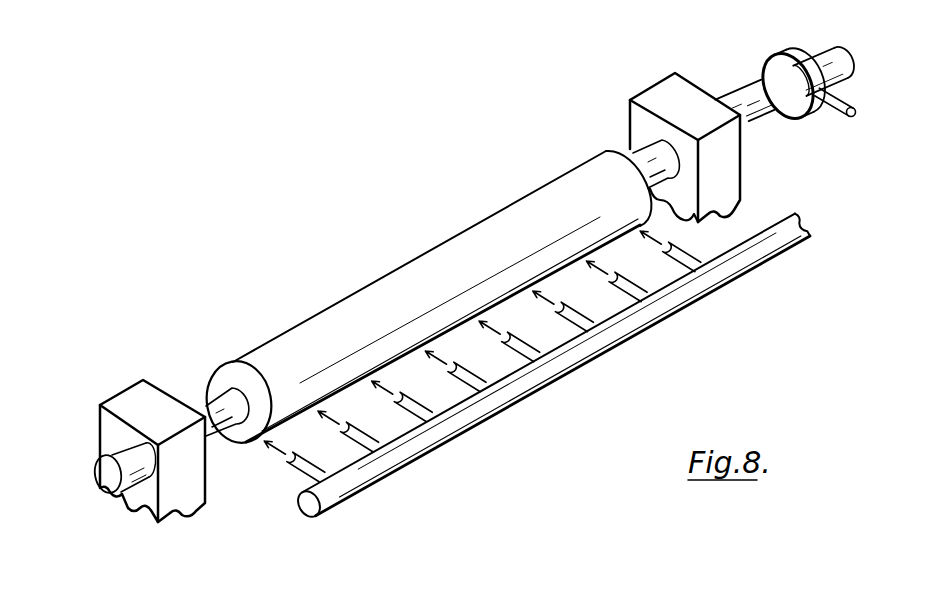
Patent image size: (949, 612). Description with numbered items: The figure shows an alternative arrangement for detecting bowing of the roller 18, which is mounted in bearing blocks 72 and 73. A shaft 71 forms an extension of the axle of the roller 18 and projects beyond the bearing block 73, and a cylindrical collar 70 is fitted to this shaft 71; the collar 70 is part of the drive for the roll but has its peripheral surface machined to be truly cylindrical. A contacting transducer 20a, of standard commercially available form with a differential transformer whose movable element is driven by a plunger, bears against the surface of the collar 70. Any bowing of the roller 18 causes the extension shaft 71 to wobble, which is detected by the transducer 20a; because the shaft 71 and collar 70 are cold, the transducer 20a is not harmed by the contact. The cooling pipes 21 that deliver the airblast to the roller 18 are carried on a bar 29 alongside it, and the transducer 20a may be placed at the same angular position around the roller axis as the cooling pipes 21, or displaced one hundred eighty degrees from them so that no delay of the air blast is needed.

The roller 18 is at (398, 275).
The cooling pipes 21 is at (290, 470).
The bar 29 is at (427, 443).
The cylindrical collar 70 is at (790, 52).
The shaft 71 is at (740, 95).
The bearing block 72 is at (193, 498).
The bearing block 73 is at (647, 93).
The contacting transducer 20a is at (918, 120).